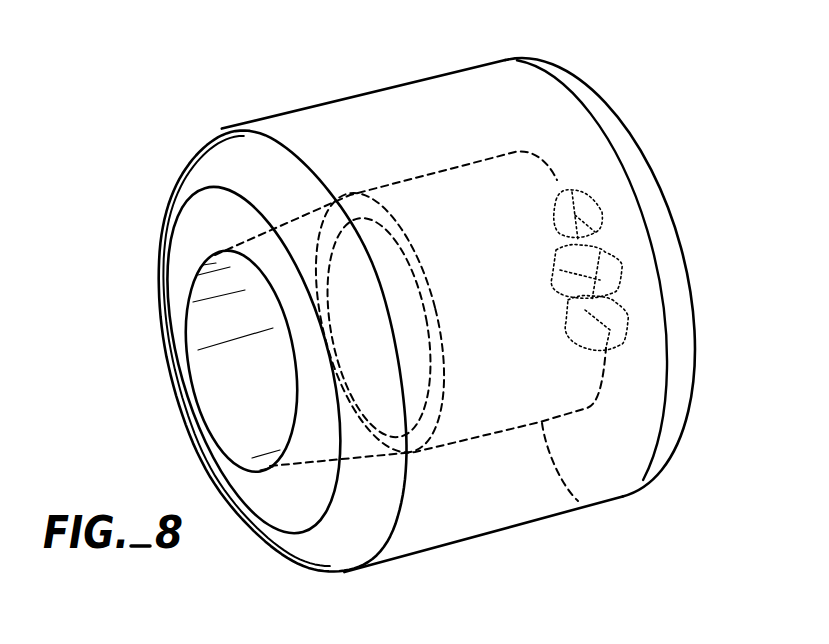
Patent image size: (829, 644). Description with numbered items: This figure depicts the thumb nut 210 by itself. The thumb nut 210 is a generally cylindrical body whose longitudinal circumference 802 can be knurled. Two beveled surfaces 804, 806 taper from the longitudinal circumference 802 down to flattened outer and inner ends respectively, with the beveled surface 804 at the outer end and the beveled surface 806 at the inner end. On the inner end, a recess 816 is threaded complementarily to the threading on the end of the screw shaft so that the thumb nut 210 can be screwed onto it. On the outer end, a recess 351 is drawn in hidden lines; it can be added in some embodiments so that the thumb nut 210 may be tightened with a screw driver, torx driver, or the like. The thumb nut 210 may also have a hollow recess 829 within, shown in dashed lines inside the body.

The thumb nut 210 is at (223, 96).
The longitudinal circumference 802 is at (502, 517).
The beveled surface 804 is at (567, 78).
The beveled surface 806 is at (320, 557).
The recess 816 is at (261, 379).
The recess 351 is at (620, 233).
The hollow recess 829 is at (580, 500).